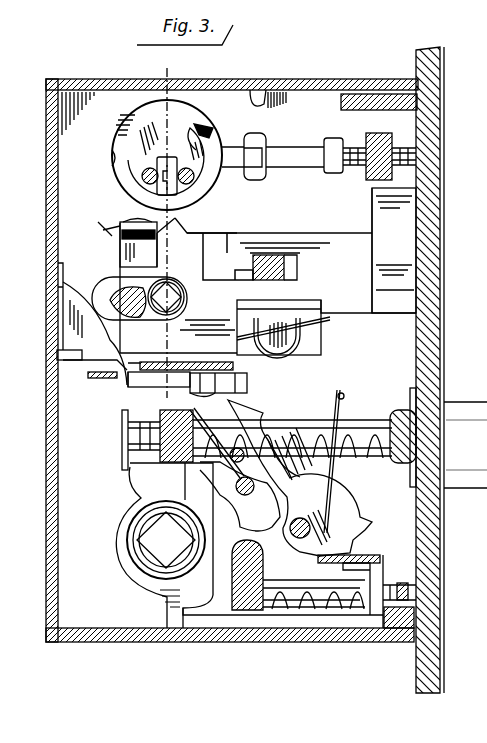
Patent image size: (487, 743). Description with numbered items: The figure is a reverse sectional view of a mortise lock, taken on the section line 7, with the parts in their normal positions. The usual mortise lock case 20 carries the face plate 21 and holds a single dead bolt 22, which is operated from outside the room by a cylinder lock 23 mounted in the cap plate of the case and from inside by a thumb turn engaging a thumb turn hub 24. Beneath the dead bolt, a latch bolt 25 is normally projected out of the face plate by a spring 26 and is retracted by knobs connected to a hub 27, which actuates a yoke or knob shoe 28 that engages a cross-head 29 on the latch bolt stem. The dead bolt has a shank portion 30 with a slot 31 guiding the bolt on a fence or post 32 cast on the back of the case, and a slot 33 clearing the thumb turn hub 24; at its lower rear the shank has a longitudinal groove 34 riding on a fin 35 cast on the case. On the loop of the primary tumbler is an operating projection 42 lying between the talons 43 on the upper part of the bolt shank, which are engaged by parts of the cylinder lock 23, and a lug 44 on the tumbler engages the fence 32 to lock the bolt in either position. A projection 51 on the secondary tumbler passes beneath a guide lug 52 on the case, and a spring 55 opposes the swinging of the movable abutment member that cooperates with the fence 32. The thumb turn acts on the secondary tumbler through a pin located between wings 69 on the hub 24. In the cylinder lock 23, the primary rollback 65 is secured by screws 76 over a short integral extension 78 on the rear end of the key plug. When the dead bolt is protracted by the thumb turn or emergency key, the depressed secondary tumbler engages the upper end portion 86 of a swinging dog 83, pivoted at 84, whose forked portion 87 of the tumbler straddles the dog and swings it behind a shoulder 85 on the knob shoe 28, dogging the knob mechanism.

The section line 7- 7 is at (172, 66).
The mortise lock case 20 is at (45, 503).
The face plate 21 is at (438, 275).
The dead bolt 22 is at (394, 250).
The cylinder lock 23 is at (114, 134).
The thumb turn hub 24 is at (185, 300).
The latch bolt 25 is at (466, 445).
The spring 26 is at (344, 423).
The hub 27 is at (142, 526).
The knob shoe 28 is at (128, 575).
The cross-head 29 is at (122, 429).
The shank portion 30 is at (301, 250).
The slot 31 is at (213, 270).
The fence 32 is at (273, 257).
The slot 33 is at (106, 291).
The longitudinal groove 34 is at (150, 380).
The fin 35 is at (233, 370).
The operating projection 42 is at (138, 222).
The talons 43 is at (175, 218).
The lug 44 is at (244, 268).
The projection 51 is at (72, 357).
The guide lug 52 is at (101, 378).
The spring 55 is at (299, 350).
The primary rollback 65 is at (135, 165).
The wings 69 is at (118, 300).
The screws 76 is at (183, 163).
The extension 78 is at (163, 167).
The swinging dog 83 is at (255, 520).
The pivot 84 is at (296, 537).
The shoulder 85 is at (344, 572).
The upper end portion 86 is at (264, 414).
The forked portion 87 is at (247, 383).